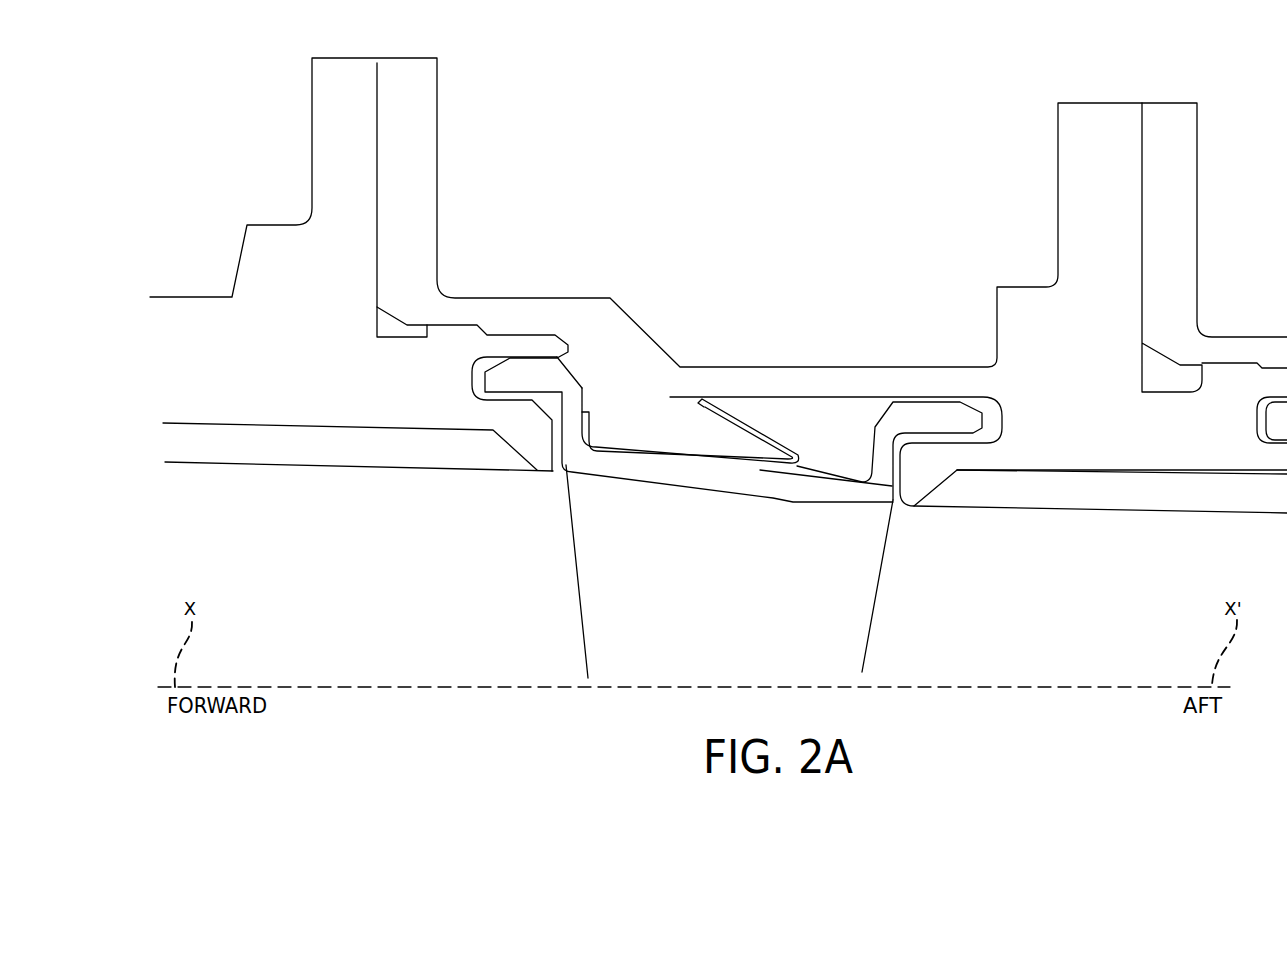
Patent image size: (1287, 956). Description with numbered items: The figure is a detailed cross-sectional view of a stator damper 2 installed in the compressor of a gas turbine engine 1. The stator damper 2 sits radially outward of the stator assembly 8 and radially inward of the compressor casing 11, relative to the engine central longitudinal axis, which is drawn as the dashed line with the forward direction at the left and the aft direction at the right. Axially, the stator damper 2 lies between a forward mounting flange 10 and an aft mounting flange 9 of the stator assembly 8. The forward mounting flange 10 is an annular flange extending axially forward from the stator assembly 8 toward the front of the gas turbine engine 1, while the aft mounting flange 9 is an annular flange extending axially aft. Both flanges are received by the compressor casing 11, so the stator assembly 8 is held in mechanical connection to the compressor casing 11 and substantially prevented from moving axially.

The gas turbine engine 1 is at (805, 148).
The stator damper 2 is at (762, 420).
The stator assembly 8 is at (835, 582).
The aft mounting flange 9 is at (929, 415).
The forward mounting flange 10 is at (532, 373).
The compressor casing 11 is at (423, 182).